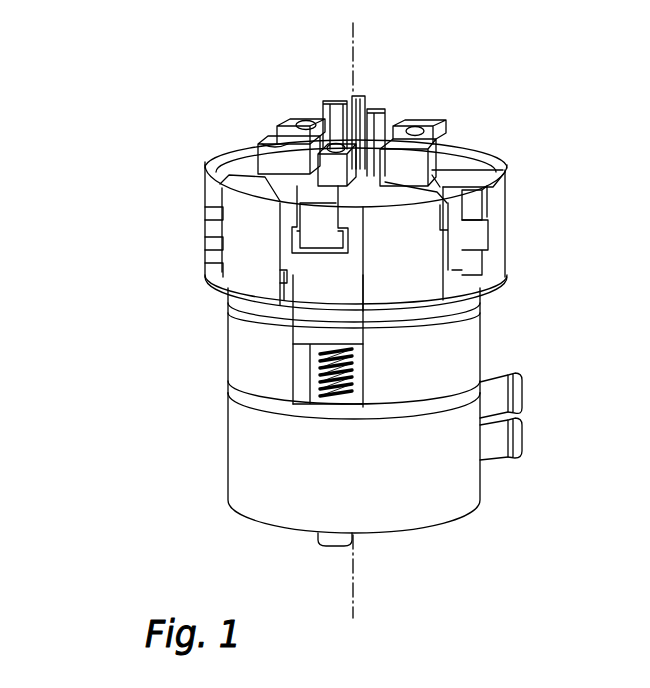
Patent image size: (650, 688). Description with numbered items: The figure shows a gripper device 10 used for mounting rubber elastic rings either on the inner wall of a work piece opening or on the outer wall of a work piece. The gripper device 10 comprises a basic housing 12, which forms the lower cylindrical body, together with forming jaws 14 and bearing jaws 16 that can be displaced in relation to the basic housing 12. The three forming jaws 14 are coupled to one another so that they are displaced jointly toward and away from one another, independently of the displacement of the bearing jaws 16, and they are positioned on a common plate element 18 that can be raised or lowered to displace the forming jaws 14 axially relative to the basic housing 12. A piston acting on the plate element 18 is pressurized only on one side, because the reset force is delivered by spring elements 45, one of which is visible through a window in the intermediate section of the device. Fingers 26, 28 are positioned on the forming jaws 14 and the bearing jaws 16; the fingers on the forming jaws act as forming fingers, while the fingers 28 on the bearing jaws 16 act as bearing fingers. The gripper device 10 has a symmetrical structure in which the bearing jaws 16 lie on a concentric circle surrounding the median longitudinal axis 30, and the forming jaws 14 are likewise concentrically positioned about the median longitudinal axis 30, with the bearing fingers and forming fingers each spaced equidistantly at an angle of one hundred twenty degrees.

The gripper device 10 is at (150, 250).
The basic housing 12 is at (245, 458).
The forming jaws 14 is at (320, 227).
The bearing jaws 16 is at (210, 162).
The plate element 18 is at (308, 332).
The fingers 26 is at (385, 101).
The fingers 28 is at (318, 99).
The median longitudinal axis 30 is at (353, 595).
The spring elements 45 is at (347, 380).